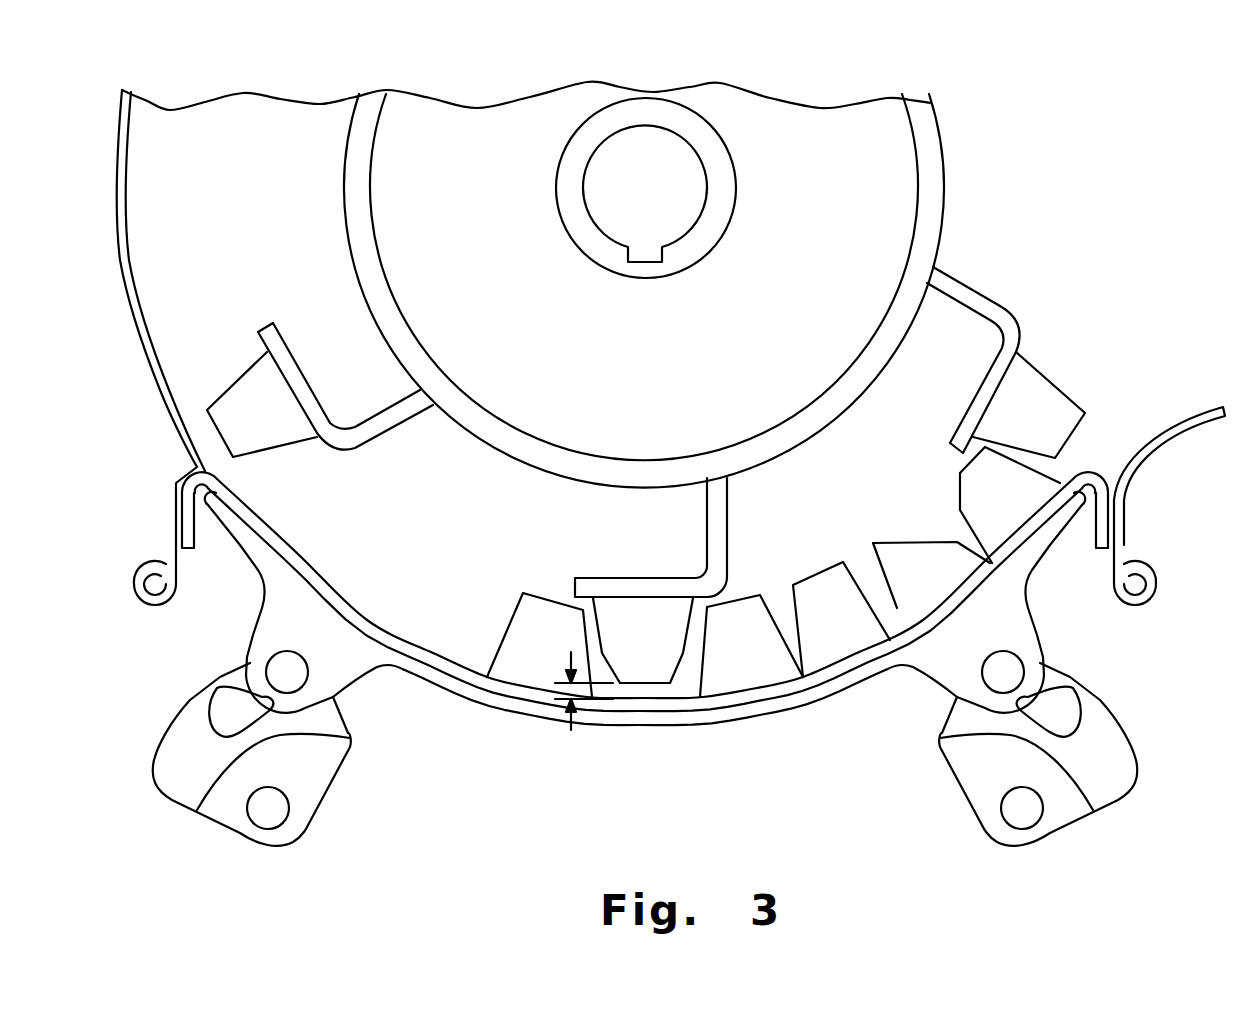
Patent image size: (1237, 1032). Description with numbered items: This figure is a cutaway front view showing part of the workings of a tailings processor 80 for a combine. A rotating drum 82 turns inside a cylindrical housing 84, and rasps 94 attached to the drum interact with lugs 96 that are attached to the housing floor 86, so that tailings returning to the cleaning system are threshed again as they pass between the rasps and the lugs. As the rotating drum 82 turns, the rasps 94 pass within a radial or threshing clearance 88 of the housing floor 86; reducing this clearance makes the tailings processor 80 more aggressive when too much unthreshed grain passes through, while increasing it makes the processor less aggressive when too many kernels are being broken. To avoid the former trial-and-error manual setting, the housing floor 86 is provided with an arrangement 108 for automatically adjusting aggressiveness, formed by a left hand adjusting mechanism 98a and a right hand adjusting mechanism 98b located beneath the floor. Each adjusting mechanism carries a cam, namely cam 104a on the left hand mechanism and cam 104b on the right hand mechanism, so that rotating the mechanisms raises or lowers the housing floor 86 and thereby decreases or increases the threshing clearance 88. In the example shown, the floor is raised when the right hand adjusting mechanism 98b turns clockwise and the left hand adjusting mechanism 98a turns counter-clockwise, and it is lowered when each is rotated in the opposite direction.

The tailings processor 80 is at (800, 92).
The rotating drum 82 is at (848, 160).
The cylindrical housing 84 is at (125, 206).
The housing floor 86 is at (745, 705).
The radial or threshing clearance 88 is at (584, 722).
The rasps 94 is at (1052, 392).
The lugs 96 is at (843, 633).
The adjusting mechanism 98a is at (232, 835).
The adjusting mechanism 98b is at (1070, 832).
The cam 104a is at (218, 692).
The cam 104b is at (1080, 692).
The arrangement 108 is at (340, 796).